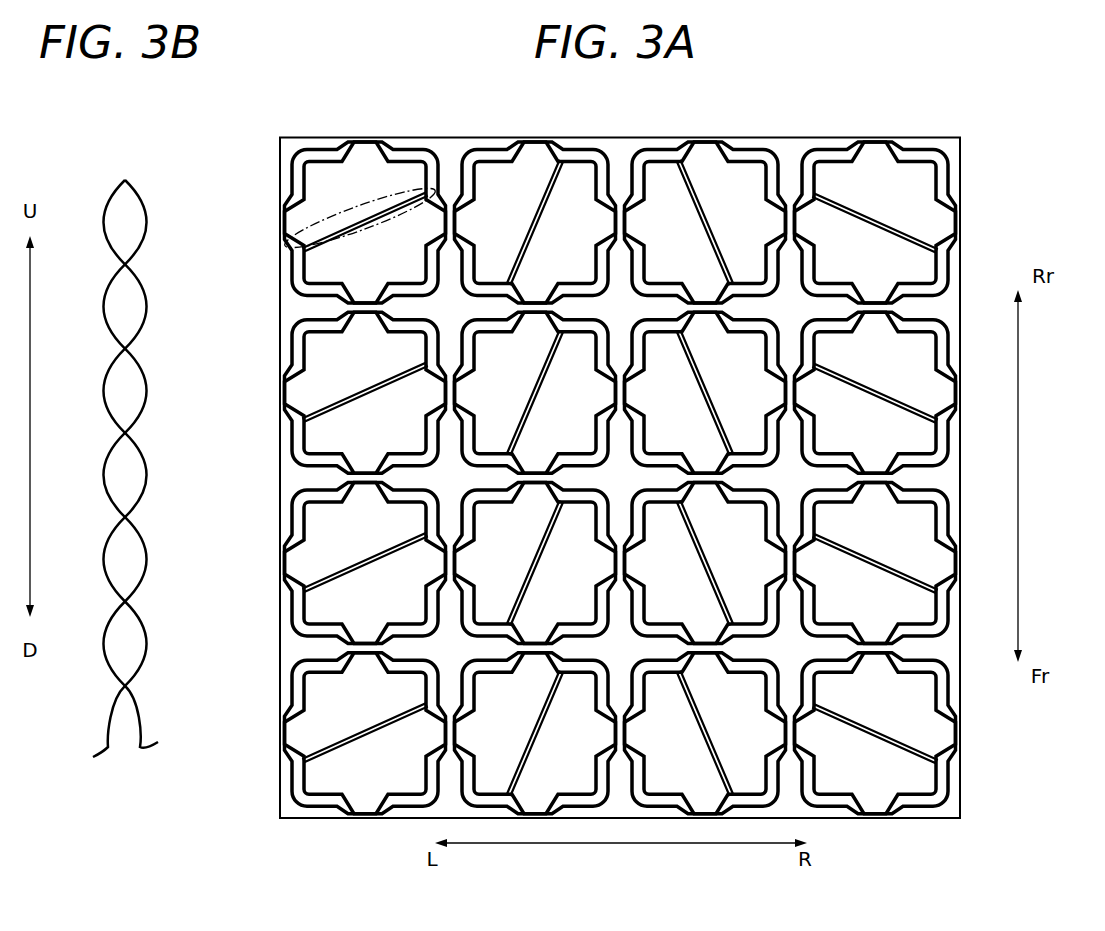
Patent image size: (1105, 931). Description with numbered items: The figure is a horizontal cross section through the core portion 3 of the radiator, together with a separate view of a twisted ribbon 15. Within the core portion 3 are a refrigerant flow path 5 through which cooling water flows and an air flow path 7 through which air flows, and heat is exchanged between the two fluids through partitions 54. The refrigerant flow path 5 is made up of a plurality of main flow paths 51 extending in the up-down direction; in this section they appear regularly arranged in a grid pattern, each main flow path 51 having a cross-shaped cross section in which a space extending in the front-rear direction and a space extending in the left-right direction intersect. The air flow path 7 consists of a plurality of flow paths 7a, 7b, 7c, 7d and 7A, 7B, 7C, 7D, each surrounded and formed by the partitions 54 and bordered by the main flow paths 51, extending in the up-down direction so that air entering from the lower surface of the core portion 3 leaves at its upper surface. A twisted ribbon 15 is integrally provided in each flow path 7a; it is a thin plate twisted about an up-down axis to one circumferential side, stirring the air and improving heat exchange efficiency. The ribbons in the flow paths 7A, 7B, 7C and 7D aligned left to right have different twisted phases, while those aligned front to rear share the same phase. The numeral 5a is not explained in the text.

In FIG. 3A, the core portion 3 is at (1018, 152).
In FIG. 3A, the refrigerant flow path 5 is at (452, 652).
In FIG. 3A, the strip junction 5a is at (615, 477).
In FIG. 3A, the air flow path 7 is at (597, 452).
In FIG. 3A, the air flow path 7A is at (357, 186).
In FIG. 3A, the air flow path 7B is at (512, 188).
In FIG. 3A, the air flow path 7C is at (740, 185).
In FIG. 3A, the air flow path 7D is at (875, 185).
In FIG. 3A, the flow path 7a is at (738, 562).
In FIG. 3A, the flow path 7b is at (745, 396).
In FIG. 3A, the flow path 7c is at (492, 565).
In FIG. 3A, the flow path 7d is at (487, 384).
In FIG. 3B, the twisted ribbon 15 is at (120, 292).
In FIG. 3A, the twisted ribbon 15 is at (335, 225).
In FIG. 3A, the main flow path 51 is at (620, 456).
In FIG. 3A, the partition 54 is at (675, 495).